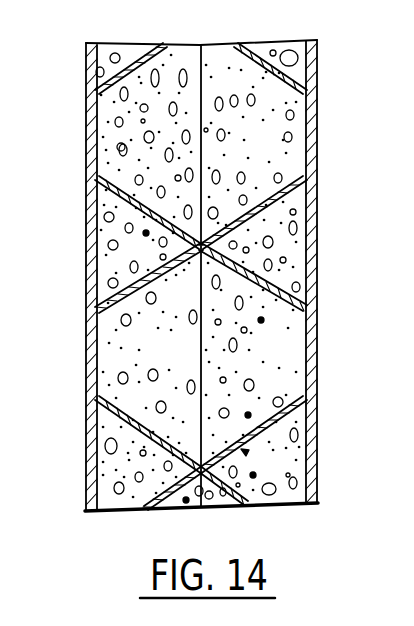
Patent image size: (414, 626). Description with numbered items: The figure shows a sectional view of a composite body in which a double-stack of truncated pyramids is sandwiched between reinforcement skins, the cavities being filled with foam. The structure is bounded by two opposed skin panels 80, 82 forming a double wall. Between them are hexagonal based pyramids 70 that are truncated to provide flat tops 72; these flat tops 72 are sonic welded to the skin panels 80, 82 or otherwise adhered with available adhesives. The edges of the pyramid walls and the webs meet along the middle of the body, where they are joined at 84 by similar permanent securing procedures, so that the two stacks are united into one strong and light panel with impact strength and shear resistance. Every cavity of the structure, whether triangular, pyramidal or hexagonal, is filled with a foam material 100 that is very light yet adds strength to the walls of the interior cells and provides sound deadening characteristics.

The hexagonal based pyramid 70 is at (246, 452).
The flat top 72 is at (100, 128).
The skin panel 80 is at (86, 200).
The skin panel 82 is at (316, 200).
The joint of pyramid walls and webs 84 is at (196, 458).
The foam material 100 is at (219, 52).